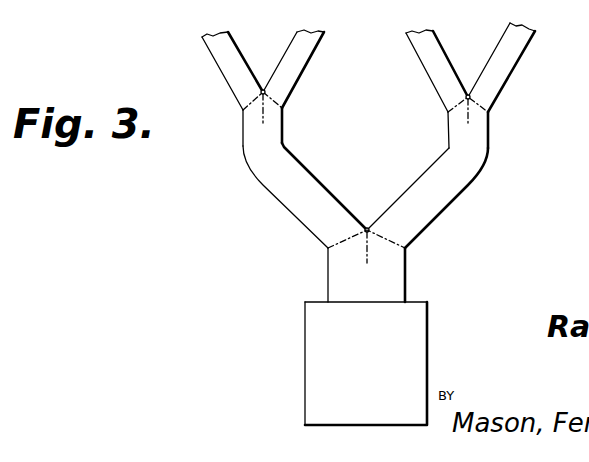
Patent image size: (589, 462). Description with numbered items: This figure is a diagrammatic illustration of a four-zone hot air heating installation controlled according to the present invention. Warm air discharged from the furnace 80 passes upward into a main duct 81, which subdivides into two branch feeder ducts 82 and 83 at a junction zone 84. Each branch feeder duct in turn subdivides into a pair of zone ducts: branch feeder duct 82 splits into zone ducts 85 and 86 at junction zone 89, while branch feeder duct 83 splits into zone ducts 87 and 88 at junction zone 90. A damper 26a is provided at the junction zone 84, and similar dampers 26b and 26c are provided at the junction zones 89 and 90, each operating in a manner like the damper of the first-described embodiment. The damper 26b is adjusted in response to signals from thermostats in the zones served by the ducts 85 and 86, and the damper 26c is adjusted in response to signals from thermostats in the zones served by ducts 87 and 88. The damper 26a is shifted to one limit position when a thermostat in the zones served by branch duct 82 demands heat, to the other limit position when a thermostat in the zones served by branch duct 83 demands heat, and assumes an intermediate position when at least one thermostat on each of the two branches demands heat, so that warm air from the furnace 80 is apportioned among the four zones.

The furnace 80 is at (413, 338).
The main duct 81 is at (397, 287).
The branch feeder duct 82 is at (330, 207).
The branch feeder duct 83 is at (438, 202).
The junction zone 84 is at (367, 221).
The zone duct 85 is at (216, 57).
The zone duct 86 is at (303, 58).
The zone duct 87 is at (440, 55).
The zone duct 88 is at (527, 43).
The junction zone 89 is at (273, 115).
The junction zone 90 is at (480, 113).
The damper 26a is at (365, 257).
The damper 26b is at (283, 95).
The damper 26c is at (495, 97).